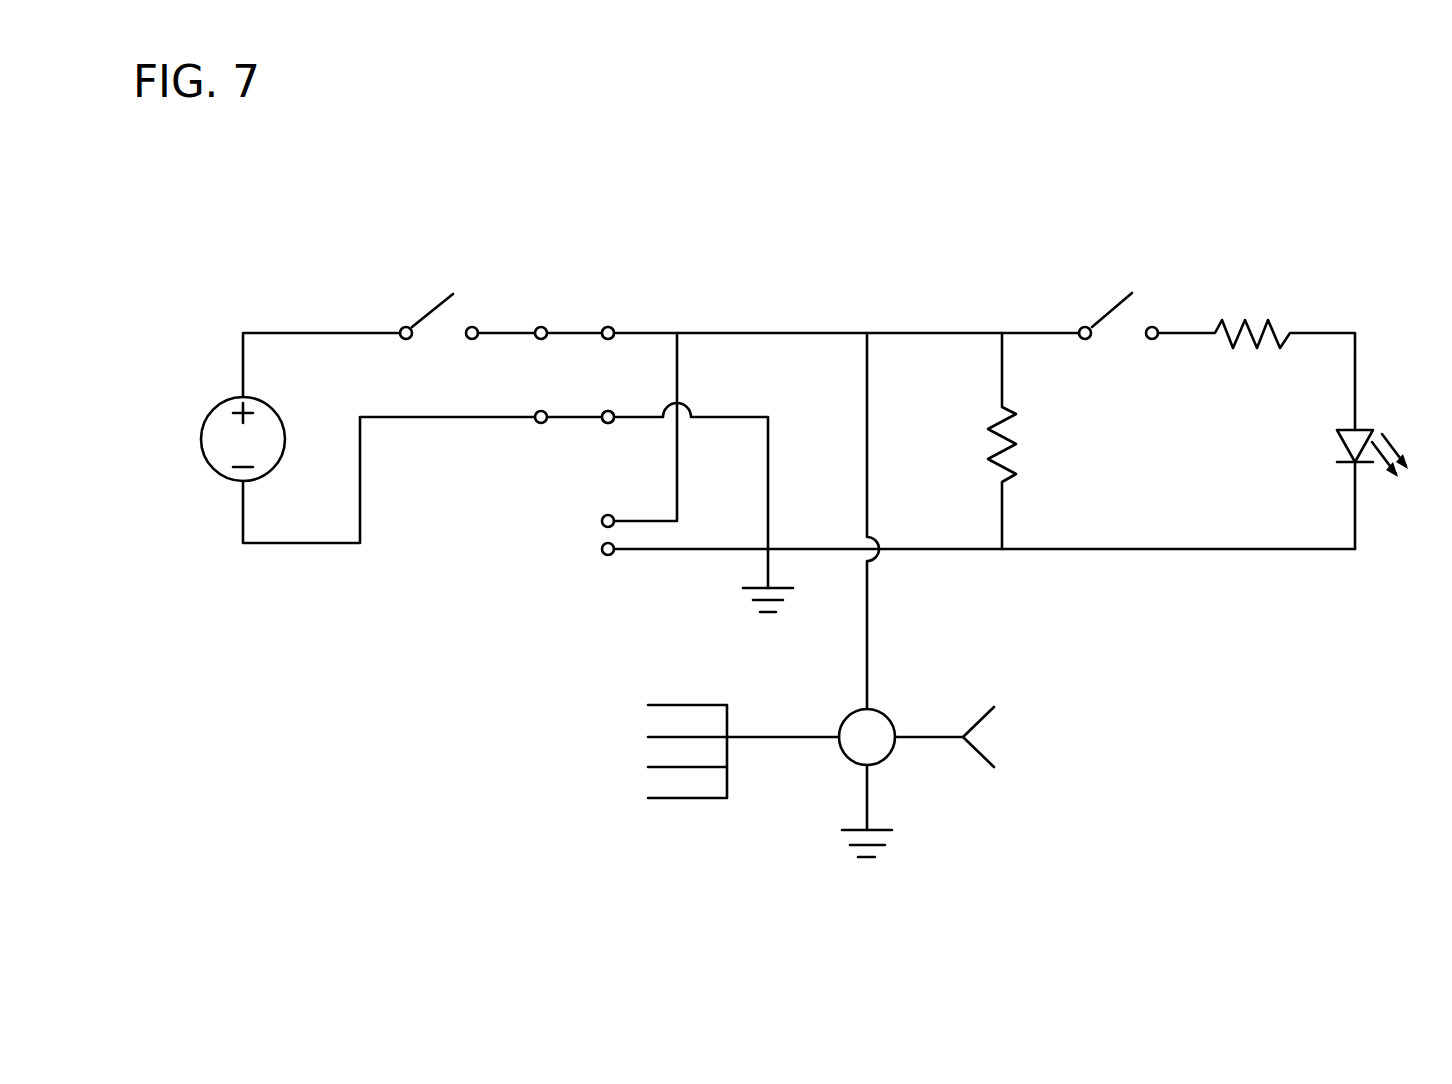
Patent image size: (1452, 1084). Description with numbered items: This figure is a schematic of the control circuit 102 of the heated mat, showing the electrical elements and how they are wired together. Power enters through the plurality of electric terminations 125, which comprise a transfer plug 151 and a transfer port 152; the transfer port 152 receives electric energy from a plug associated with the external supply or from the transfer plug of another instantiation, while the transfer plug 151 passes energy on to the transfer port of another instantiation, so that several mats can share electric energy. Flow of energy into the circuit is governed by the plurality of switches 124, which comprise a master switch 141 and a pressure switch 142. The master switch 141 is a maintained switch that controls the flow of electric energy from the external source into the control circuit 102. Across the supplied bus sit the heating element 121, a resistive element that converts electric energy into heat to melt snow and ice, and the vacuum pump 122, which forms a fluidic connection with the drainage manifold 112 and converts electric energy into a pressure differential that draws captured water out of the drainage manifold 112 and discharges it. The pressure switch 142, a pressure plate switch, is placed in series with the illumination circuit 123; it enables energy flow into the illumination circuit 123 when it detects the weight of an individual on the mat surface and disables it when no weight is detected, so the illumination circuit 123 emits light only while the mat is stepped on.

The control circuit 102 is at (1320, 195).
The drainage manifold 112 is at (692, 803).
The heating element 121 is at (1020, 437).
The vacuum pump 122 is at (882, 711).
The illumination circuit 123 is at (1417, 568).
The plurality of switches 124 is at (1389, 812).
The plurality of electric terminations 125 is at (1170, 812).
The master switch 141 is at (414, 300).
The pressure switch 142 is at (1100, 310).
The transfer plug 151 is at (597, 495).
The transfer port 152 is at (608, 305).